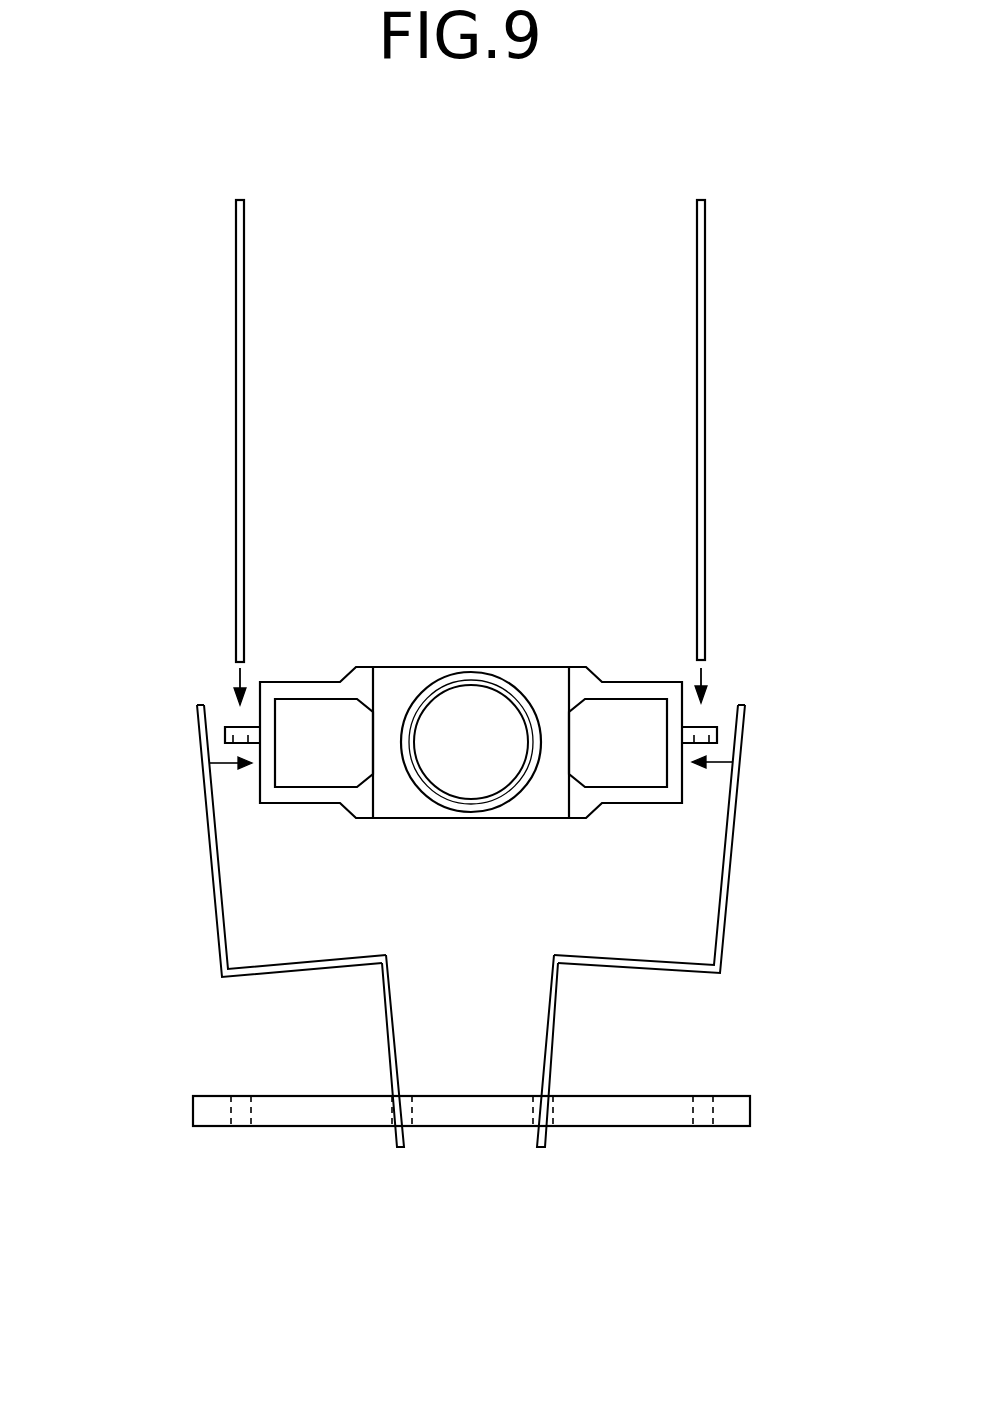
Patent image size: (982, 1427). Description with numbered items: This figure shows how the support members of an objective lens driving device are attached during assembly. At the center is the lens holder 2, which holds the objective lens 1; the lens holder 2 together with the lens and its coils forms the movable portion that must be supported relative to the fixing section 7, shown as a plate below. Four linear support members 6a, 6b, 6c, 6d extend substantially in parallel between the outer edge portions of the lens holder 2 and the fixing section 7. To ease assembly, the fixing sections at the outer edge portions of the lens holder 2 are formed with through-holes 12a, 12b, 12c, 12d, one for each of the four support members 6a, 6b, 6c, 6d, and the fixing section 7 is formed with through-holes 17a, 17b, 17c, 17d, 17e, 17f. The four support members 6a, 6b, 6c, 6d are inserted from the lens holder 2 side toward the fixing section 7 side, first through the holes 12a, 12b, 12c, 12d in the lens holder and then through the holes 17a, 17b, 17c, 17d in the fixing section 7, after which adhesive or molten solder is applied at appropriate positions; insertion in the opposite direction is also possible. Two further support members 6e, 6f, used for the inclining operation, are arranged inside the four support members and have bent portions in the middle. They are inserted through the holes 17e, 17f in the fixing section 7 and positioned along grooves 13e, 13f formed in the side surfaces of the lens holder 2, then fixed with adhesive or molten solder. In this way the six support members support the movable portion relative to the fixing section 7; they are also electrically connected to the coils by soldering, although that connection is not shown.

The objective lens 1 is at (488, 722).
The lens holder 2 is at (395, 690).
The support member 6a is at (778, 430).
The support member 6b is at (706, 391).
The support member 6c is at (152, 431).
The support member 6d is at (236, 390).
The support member 6e is at (732, 860).
The support member 6f is at (210, 872).
The fixing section 7 is at (643, 1105).
The through-hole 12a is at (796, 660).
The through-hole 12b is at (703, 723).
The through-hole 12c is at (154, 655).
The through-hole 12d is at (237, 723).
The groove 13e is at (718, 732).
The groove 13f is at (225, 733).
The through-hole 17a is at (775, 1192).
The through-hole 17b is at (713, 1105).
The through-hole 17c is at (188, 1192).
The through-hole 17d is at (232, 1107).
The through-hole 17e is at (553, 1106).
The through-hole 17f is at (388, 1106).